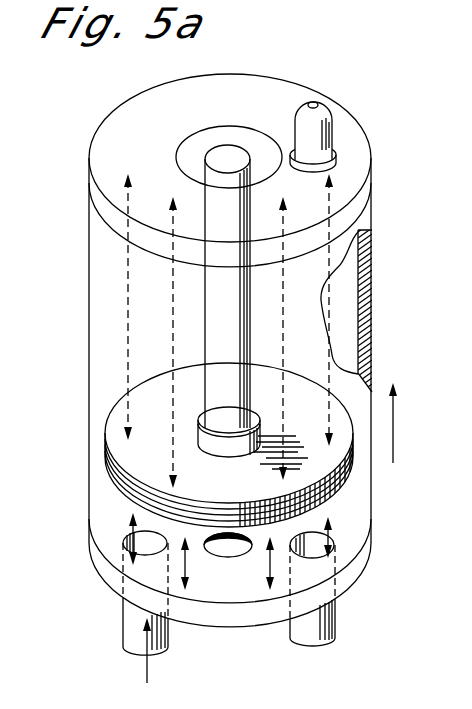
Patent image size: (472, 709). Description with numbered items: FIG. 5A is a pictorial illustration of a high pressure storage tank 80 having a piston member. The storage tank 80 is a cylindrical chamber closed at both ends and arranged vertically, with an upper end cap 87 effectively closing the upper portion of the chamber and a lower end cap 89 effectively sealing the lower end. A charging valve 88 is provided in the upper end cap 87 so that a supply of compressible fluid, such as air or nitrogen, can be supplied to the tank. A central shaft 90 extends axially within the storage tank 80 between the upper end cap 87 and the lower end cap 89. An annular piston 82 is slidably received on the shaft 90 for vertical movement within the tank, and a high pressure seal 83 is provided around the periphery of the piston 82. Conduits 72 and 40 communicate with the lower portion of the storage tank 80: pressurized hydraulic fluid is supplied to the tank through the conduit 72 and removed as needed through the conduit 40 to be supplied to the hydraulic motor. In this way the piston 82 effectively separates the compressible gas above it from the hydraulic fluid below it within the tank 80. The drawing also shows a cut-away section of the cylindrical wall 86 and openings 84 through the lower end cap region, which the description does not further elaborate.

The conduit 40 is at (335, 627).
The conduit 72 is at (133, 642).
The high pressure storage tank 80 is at (365, 500).
The annular piston 82 is at (140, 458).
The high pressure seal 83 is at (353, 472).
The base plate holes 84 is at (118, 518).
The cylindrical housing wall 86 is at (310, 318).
The upper end cap 87 is at (356, 159).
The charging valve 88 is at (329, 118).
The lower end cap 89 is at (358, 567).
The central shaft 90 is at (218, 283).